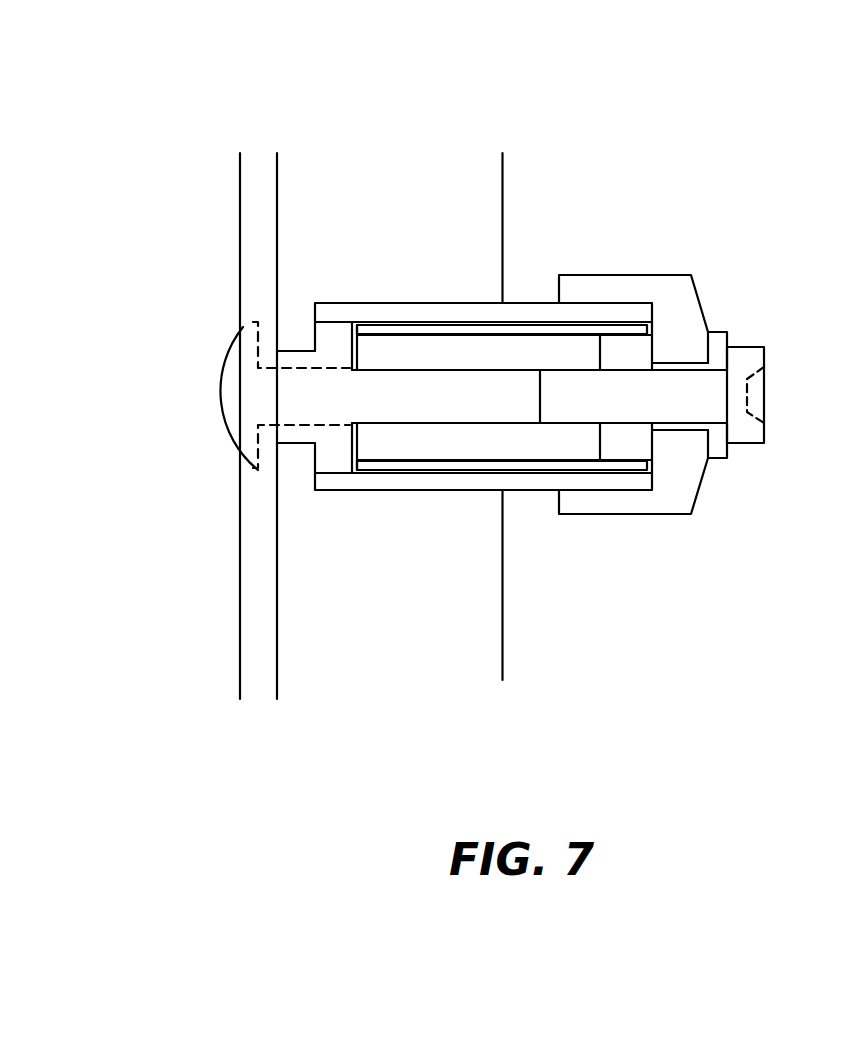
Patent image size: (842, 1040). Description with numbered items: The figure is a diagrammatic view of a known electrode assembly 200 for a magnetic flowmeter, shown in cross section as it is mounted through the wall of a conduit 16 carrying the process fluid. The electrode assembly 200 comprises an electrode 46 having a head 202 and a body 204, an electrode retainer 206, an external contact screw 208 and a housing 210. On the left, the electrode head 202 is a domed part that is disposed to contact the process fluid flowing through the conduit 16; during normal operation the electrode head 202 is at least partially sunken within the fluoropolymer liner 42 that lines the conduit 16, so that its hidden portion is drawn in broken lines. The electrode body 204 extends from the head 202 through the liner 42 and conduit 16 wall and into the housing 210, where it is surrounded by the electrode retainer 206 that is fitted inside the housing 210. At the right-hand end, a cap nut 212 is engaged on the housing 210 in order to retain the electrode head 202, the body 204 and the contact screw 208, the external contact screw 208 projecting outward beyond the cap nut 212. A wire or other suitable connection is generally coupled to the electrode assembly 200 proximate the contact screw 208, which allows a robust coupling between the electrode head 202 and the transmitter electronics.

The electrode assembly 200 is at (622, 79).
The fluoropolymer liner 42 is at (252, 607).
The conduit 16 is at (453, 577).
The electrode head 202 is at (223, 372).
The electrode 46 is at (212, 416).
The electrode body 204 is at (336, 400).
The electrode retainer 206 is at (521, 347).
The housing 210 is at (592, 313).
The cap nut 212 is at (680, 300).
The external contact screw 208 is at (746, 435).